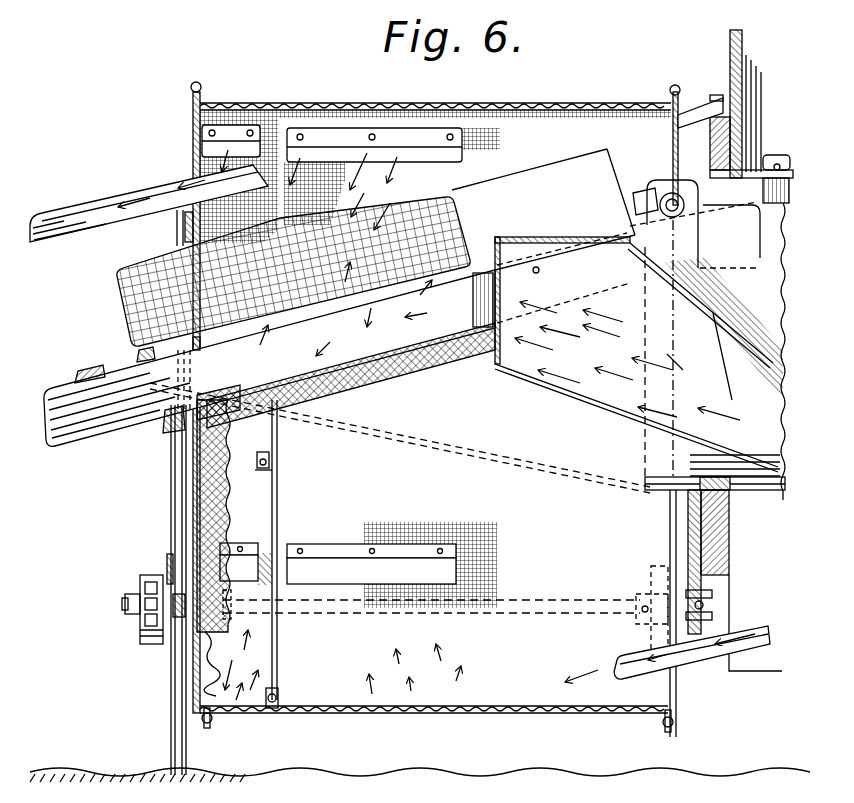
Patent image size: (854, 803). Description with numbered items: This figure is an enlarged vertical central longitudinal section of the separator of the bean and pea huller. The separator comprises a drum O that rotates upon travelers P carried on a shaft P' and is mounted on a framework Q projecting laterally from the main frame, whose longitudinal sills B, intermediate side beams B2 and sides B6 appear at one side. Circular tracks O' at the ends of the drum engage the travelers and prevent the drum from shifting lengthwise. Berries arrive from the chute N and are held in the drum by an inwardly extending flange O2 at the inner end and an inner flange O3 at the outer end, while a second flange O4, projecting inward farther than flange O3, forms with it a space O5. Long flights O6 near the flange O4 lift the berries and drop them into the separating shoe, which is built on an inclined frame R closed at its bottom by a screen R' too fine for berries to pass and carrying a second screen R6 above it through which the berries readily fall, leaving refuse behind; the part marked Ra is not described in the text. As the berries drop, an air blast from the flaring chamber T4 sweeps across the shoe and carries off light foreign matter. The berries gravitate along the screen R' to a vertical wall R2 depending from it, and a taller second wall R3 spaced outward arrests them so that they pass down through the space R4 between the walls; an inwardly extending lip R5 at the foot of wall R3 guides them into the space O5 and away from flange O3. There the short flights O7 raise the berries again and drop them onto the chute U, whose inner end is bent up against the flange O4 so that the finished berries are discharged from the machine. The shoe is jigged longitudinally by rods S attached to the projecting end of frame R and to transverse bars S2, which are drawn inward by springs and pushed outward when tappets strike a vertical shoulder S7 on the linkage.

The drum O is at (435, 415).
The circular tracks O' is at (437, 737).
The inwardly extending flange O2 is at (677, 703).
The inner flange O3 is at (196, 700).
The flange O4 is at (290, 655).
The space O5 is at (264, 710).
The flights O6 is at (462, 150).
The flights O7 is at (200, 133).
The chute U is at (62, 220).
The frame R is at (490, 238).
The screen R' is at (351, 375).
The screen junction Ra is at (214, 398).
The vertical wall R2 is at (228, 486).
The second wall R3 is at (192, 512).
The space R4 is at (228, 436).
The inwardly extending lip R5 is at (202, 664).
The second screen R6 is at (326, 302).
The rods S is at (512, 460).
The bars S2 is at (655, 503).
The vertical shoulder S7 is at (86, 376).
The framework Q is at (173, 497).
The travelers P is at (393, 619).
The shaft P' is at (431, 620).
The chamber T4 is at (606, 402).
The longitudinal sills B is at (688, 543).
The intermediate side beams B2 is at (747, 126).
The sides B6 is at (732, 40).
The chute N is at (723, 664).